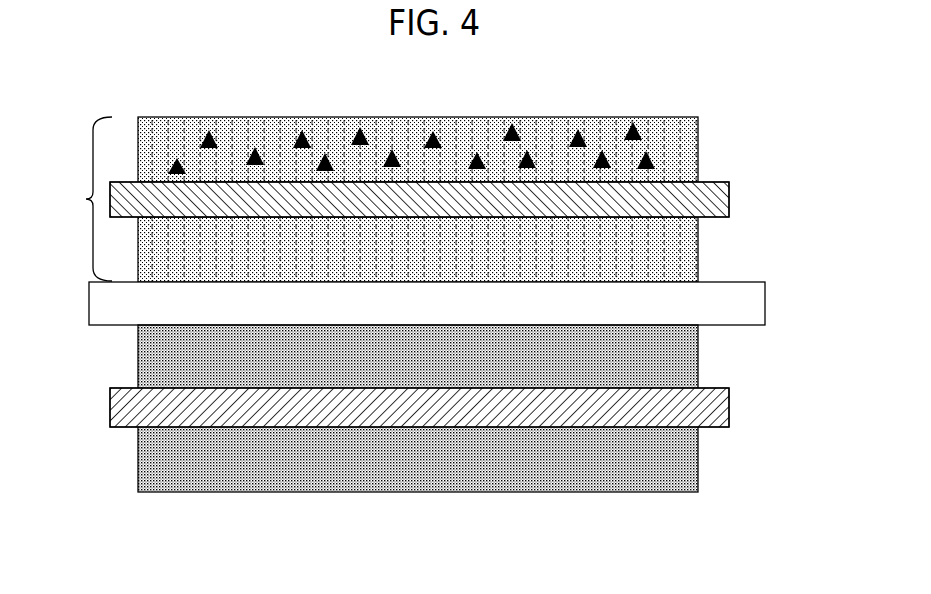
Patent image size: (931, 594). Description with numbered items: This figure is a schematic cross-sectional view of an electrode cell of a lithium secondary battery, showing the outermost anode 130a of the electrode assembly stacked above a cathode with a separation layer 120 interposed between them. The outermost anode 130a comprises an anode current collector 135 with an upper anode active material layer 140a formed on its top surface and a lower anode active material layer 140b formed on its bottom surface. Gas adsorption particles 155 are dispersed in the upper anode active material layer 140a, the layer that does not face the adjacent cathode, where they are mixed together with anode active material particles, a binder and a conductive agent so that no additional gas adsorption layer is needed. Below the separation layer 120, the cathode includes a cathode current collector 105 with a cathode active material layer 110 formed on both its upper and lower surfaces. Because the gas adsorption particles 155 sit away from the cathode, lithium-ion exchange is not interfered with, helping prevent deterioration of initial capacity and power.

The outermost anode 130a is at (422, 199).
The gas adsorption particles 155 is at (637, 124).
The upper anode active material layer 140a is at (688, 162).
The anode current collector 135 is at (730, 198).
The lower anode active material layer 140b is at (688, 248).
The separation layer 120 is at (748, 305).
The cathode current collector 105 is at (730, 406).
The cathode active material layer 110 is at (688, 473).